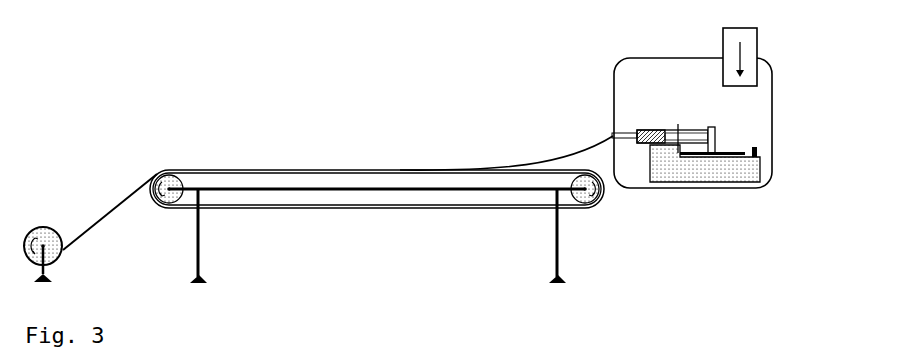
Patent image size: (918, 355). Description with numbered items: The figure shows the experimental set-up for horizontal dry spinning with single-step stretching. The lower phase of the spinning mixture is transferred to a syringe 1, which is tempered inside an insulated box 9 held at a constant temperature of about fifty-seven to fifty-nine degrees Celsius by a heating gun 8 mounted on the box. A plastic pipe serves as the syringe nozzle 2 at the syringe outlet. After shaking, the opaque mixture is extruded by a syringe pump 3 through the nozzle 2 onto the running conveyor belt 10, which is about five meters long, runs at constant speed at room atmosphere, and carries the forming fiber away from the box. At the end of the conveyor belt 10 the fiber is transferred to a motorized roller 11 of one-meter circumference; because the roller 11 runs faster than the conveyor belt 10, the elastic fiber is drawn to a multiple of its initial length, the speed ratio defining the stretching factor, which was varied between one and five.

The syringe 1 is at (688, 137).
The syringe nozzle 2 is at (622, 133).
The syringe pump 3 is at (705, 163).
The heating gun 8 is at (723, 50).
The insulated box 9 is at (620, 58).
The conveyor belt 10 is at (333, 226).
The motorized roller 11 is at (47, 239).